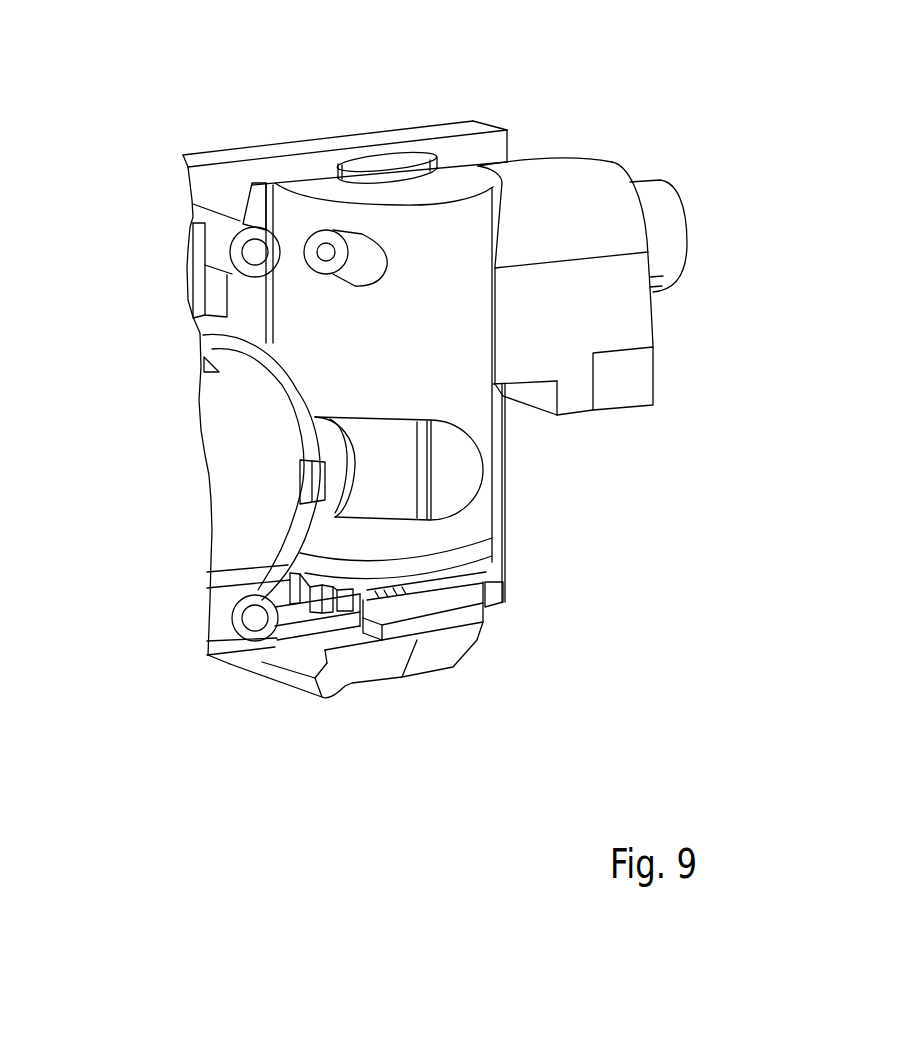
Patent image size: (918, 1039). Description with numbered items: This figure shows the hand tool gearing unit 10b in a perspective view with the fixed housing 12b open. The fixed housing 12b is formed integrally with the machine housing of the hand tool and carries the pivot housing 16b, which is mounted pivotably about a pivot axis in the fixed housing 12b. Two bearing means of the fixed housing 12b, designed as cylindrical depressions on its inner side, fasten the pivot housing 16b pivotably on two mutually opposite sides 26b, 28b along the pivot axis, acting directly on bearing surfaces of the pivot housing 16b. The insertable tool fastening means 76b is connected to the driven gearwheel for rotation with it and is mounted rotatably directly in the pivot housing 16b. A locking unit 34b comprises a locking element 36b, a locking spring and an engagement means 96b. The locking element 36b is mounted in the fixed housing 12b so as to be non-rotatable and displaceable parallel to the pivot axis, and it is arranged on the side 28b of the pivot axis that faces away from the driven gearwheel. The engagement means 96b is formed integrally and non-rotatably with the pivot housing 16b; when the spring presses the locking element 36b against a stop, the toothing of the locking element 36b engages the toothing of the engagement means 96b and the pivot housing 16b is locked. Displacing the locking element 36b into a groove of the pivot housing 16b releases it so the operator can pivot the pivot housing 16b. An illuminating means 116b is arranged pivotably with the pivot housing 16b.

The hand tool gearing unit 10b is at (150, 121).
The fixed housing 12b is at (333, 160).
The side 26b is at (432, 96).
The pivot housing 16b is at (575, 163).
The insertable tool fastening means 76b is at (667, 222).
The illuminating means 116b is at (681, 405).
The locking unit 34b is at (430, 693).
The locking element 36b is at (457, 646).
The side 28b is at (360, 708).
The engagement means 96b is at (320, 600).